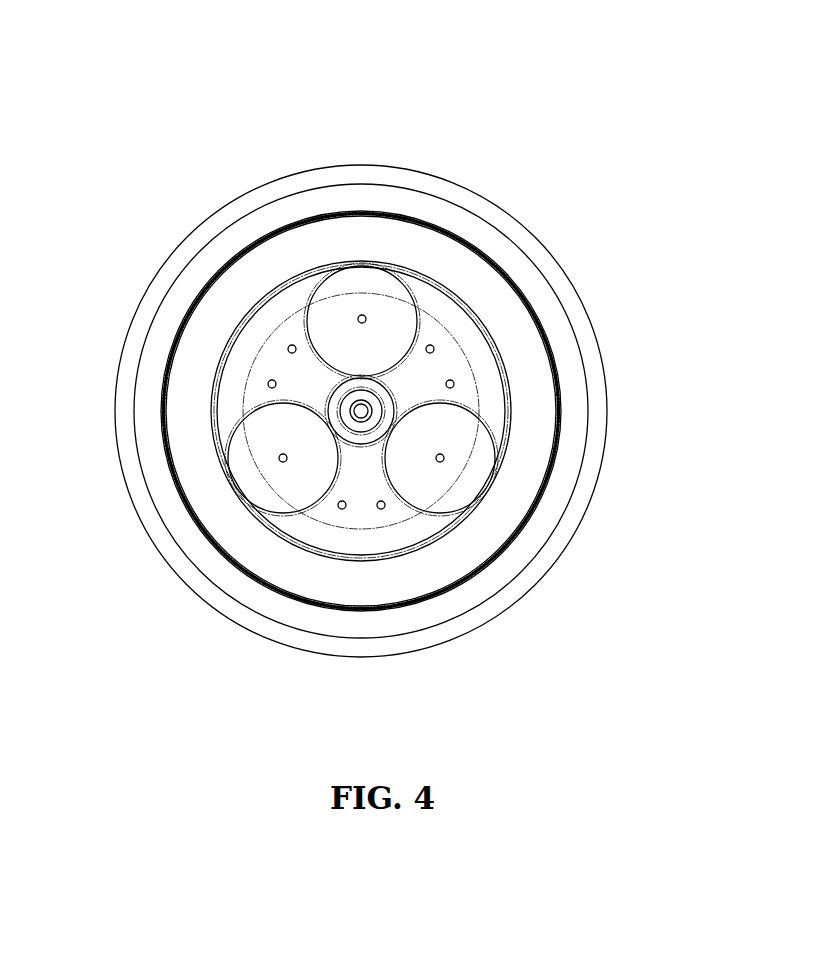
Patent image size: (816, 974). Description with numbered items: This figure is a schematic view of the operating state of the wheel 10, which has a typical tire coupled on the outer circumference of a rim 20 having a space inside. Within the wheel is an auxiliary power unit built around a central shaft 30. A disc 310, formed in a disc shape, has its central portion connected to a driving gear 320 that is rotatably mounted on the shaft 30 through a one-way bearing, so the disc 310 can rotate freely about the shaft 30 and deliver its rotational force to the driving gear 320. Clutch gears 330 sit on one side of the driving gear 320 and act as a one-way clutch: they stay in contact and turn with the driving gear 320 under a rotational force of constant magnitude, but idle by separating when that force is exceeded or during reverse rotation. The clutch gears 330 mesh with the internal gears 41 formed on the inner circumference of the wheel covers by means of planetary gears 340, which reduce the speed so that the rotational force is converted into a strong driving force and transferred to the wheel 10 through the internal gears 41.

The wheel 10 is at (423, 188).
The rim 20 is at (358, 212).
The internal gears 41 is at (252, 267).
The shaft 30 is at (368, 411).
The disc 310 is at (377, 513).
The driving gear 320 is at (366, 394).
The clutch gears 330 is at (337, 402).
The planetary gears 340 is at (392, 303).